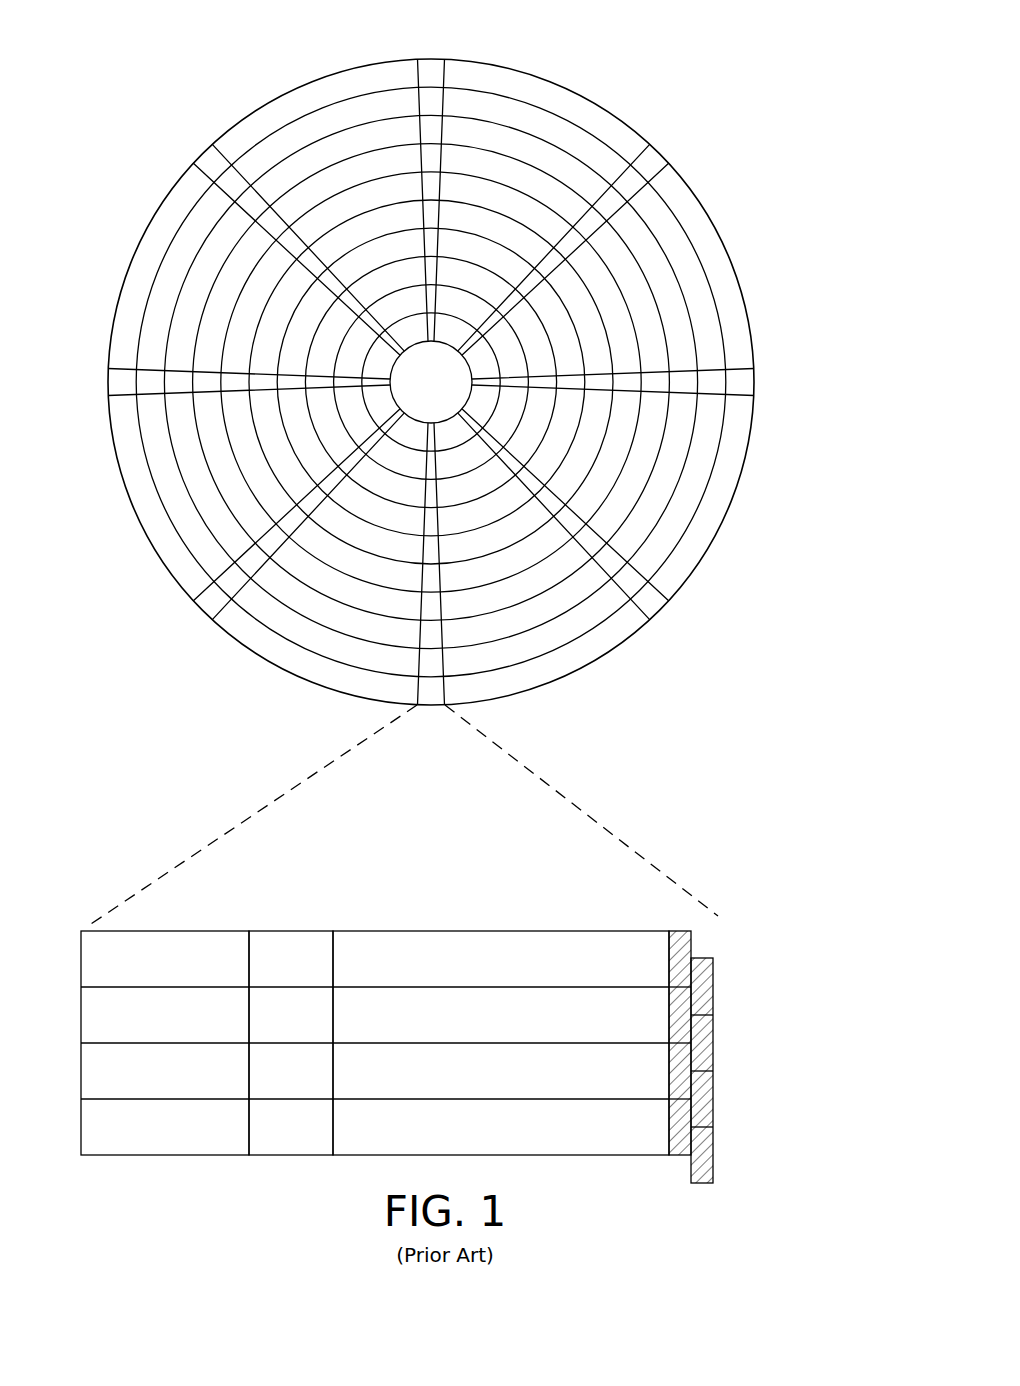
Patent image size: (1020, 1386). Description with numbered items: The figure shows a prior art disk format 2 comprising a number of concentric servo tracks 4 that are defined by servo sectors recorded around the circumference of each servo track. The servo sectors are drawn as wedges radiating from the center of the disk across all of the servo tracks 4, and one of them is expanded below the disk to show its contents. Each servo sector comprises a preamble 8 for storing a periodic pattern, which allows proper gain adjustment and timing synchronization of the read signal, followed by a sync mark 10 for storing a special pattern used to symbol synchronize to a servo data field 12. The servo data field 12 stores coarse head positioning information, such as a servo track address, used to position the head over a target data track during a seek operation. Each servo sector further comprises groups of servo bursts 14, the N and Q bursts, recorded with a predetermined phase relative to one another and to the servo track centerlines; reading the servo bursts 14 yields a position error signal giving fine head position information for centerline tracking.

The disk format 2 is at (186, 60).
The servo tracks 4 is at (542, 125).
The preamble 8 is at (174, 931).
The sync mark 10 is at (294, 931).
The servo data field 12 is at (488, 931).
The servo bursts 14 is at (712, 925).